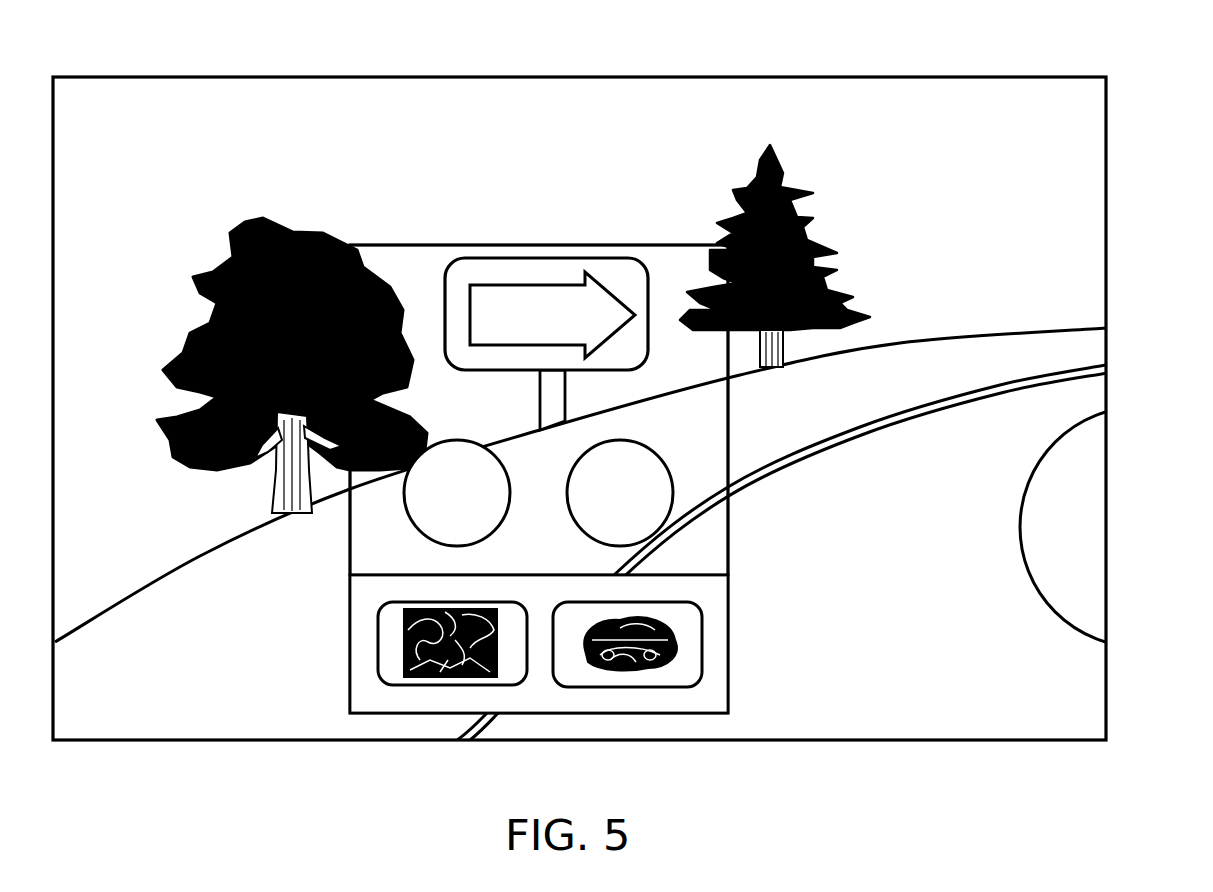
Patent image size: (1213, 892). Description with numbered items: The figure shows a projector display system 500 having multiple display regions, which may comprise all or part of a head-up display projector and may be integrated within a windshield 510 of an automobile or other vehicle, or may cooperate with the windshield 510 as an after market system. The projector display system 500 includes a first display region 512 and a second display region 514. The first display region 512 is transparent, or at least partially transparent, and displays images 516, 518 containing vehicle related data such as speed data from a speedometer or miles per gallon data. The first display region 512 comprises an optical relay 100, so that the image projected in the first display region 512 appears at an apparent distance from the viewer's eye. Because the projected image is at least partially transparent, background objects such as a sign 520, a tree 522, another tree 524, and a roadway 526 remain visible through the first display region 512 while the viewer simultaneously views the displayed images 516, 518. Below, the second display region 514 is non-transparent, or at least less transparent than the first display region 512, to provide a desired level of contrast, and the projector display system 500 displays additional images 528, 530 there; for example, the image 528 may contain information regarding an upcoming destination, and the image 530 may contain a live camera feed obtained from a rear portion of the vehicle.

The projector display system 500 is at (1115, 40).
The windshield 510 is at (1107, 133).
The optical relay 100 is at (498, 243).
The first display region 512 is at (418, 243).
The sign 520 is at (592, 257).
The tree 522 is at (310, 228).
The tree 524 is at (758, 175).
The roadway 526 is at (957, 370).
The image 516 is at (405, 512).
The image 518 is at (673, 480).
The second display region 514 is at (728, 612).
The image 528 is at (378, 645).
The image 530 is at (702, 640).